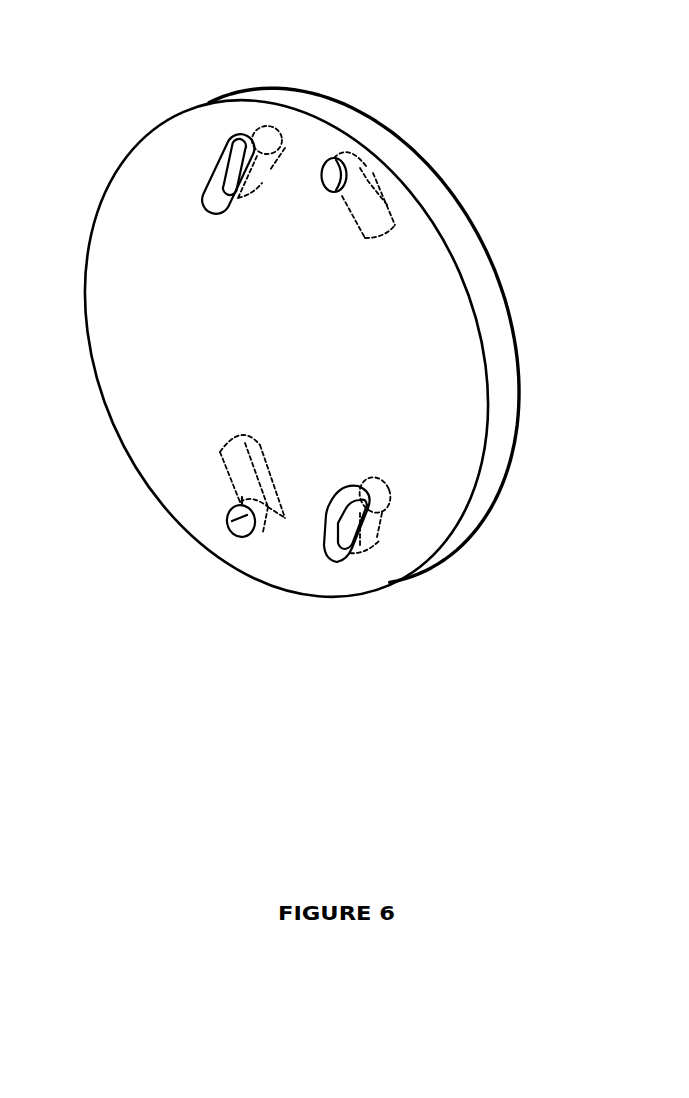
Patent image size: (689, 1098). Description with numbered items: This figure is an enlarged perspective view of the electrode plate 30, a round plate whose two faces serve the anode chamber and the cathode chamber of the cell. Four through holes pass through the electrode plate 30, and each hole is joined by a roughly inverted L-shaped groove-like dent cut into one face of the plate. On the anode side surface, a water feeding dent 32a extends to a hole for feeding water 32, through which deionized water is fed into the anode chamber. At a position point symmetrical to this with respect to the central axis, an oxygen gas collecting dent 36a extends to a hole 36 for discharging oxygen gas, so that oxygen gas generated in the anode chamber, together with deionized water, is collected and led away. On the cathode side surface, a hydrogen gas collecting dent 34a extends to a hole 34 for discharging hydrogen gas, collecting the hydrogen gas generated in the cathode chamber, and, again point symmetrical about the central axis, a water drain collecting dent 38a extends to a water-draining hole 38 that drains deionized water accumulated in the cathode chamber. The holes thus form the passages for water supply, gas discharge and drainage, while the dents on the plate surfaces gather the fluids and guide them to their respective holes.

The electrode plate 30 is at (468, 237).
The hole for feeding water 32 is at (443, 570).
The water feeding dent 32a is at (357, 500).
The hole for discharging hydrogen gas 34 is at (431, 145).
The hydrogen gas collecting dent 34a is at (397, 213).
The hole for discharging oxygen gas 36 is at (214, 107).
The oxygen gas collecting dent 36a is at (233, 138).
The water-draining hole 38 is at (178, 550).
The water drain collecting dent 38a is at (222, 453).